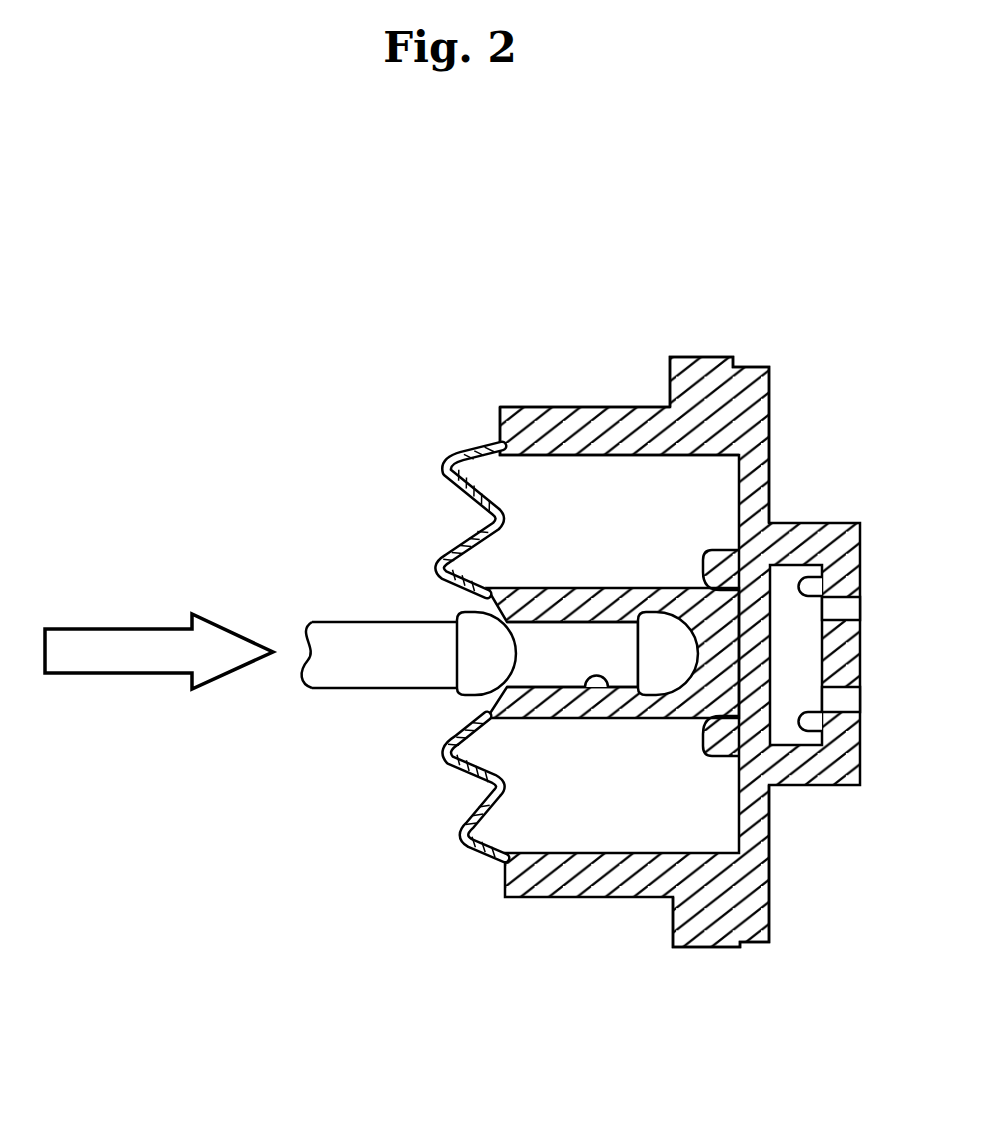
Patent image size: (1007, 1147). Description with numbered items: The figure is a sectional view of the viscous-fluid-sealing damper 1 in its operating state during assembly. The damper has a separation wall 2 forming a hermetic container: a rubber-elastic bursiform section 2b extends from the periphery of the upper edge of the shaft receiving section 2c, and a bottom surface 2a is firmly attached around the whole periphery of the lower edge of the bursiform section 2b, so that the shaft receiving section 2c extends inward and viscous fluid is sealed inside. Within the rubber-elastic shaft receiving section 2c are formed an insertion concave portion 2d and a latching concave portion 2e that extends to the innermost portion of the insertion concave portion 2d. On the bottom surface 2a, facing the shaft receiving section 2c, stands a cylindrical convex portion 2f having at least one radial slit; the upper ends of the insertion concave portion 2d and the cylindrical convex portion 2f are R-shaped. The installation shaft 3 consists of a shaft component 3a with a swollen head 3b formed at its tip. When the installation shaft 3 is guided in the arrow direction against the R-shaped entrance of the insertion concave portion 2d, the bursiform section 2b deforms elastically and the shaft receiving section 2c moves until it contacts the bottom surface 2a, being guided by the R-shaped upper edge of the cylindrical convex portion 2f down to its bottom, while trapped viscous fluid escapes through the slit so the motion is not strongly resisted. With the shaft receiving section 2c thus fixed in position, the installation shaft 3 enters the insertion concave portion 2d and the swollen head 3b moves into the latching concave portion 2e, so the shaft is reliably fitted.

The viscous-fluid-sealing damper 1 is at (476, 862).
The separation wall 2 is at (625, 625).
The bottom surface 2a is at (770, 443).
The bursiform section 2b is at (613, 406).
The shaft receiving section 2c is at (530, 588).
The insertion concave portion 2d is at (584, 688).
The latching concave portion 2e is at (665, 696).
The cylindrical convex portion 2f is at (718, 551).
The installation shaft 3 is at (379, 672).
The shaft component 3a is at (394, 622).
The swollen head 3b is at (459, 697).